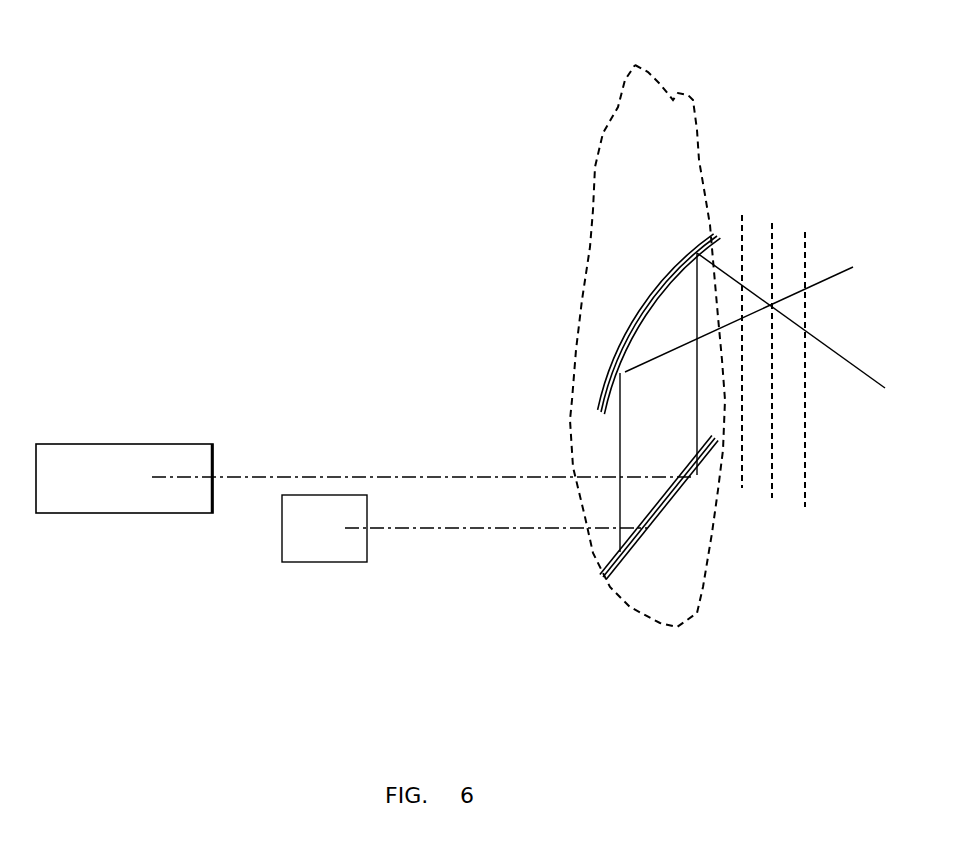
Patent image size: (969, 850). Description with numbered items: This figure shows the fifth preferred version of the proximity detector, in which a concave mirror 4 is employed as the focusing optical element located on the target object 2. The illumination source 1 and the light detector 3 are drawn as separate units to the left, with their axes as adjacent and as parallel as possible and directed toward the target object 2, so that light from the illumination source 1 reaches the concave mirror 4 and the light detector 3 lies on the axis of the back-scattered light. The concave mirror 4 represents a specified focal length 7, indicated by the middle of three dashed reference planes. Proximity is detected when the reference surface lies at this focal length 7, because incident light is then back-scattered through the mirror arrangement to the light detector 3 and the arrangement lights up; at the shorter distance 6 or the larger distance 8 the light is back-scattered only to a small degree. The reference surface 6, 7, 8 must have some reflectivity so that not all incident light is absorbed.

The illumination source 1 is at (165, 472).
The target object 2 is at (687, 340).
The light detector 3 is at (325, 537).
The concave mirror 4 is at (665, 271).
The shorter distance (reference surface) 6 is at (750, 381).
The specified focal length (reference surface) 7 is at (775, 385).
The larger distance (reference surface) 8 is at (812, 390).